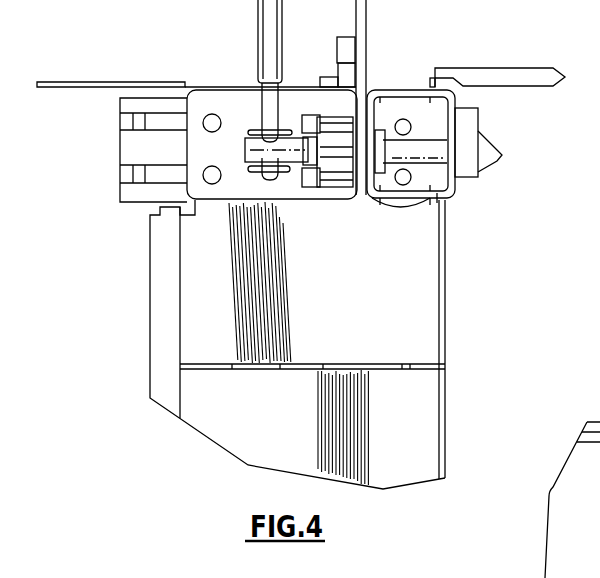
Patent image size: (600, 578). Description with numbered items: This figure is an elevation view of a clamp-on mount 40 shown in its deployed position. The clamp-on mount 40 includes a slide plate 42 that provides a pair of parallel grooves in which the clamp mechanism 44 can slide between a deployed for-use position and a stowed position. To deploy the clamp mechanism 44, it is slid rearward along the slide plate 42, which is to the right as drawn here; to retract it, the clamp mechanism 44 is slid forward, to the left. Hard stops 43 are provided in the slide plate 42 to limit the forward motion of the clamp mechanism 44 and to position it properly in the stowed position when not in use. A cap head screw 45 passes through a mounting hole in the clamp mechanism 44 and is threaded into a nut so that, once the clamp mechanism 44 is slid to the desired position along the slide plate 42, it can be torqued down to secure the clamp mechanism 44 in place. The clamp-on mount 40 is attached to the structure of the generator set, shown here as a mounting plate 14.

The frame plate 14 is at (490, 68).
The clamp-on mount 40 is at (125, 239).
The slide plate 42 is at (157, 97).
The hard stops 43 is at (128, 125).
The clamp mechanism 44 is at (243, 86).
The cap head screw 45 is at (403, 178).